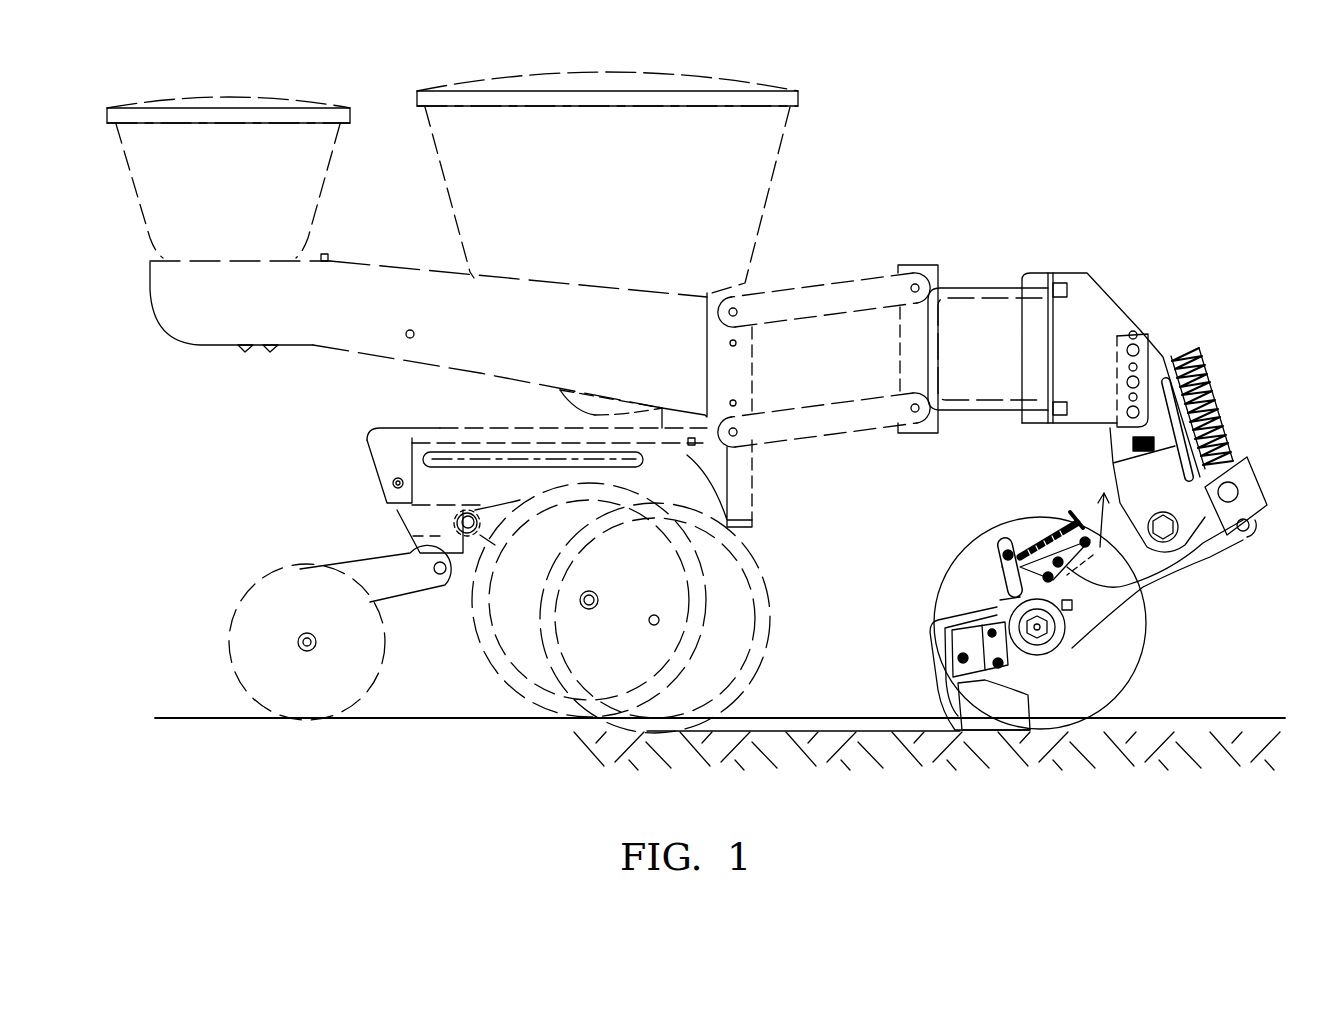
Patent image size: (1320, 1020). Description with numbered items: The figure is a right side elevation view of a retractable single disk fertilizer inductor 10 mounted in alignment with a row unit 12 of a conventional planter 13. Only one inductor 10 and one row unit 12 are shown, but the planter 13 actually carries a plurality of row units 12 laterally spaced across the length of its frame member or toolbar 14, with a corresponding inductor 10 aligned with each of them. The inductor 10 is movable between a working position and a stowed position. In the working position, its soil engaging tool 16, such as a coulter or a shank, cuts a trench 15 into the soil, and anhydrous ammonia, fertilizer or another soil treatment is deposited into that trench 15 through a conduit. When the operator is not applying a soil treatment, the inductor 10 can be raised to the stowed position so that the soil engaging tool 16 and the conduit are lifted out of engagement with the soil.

The retractable single disk fertilizer inductor 10 is at (1200, 257).
The row unit 12 is at (295, 405).
The planter 13 is at (820, 133).
The toolbar 14 is at (980, 292).
The trench 15 is at (863, 722).
The soil engaging tool 16 is at (1172, 650).